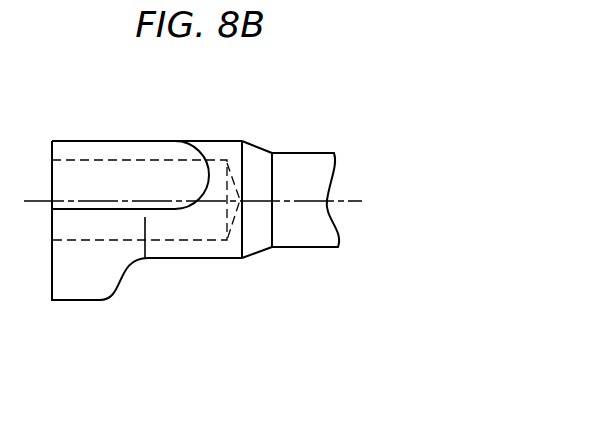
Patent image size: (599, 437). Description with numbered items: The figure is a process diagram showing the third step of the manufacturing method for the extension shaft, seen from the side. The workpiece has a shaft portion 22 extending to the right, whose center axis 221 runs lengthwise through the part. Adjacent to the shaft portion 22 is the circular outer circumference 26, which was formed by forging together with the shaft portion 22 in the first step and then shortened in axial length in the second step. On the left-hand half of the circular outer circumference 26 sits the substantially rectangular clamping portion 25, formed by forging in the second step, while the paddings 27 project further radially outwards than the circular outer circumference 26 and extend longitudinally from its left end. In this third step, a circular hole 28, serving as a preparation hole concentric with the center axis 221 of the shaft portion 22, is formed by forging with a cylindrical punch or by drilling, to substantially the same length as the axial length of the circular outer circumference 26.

The shaft portion 22 is at (293, 140).
The center axis 221 is at (316, 203).
The clamping portion 25 is at (98, 285).
The circular outer circumference 26 is at (202, 262).
The padding 27 is at (104, 150).
The circular hole 28 is at (145, 164).